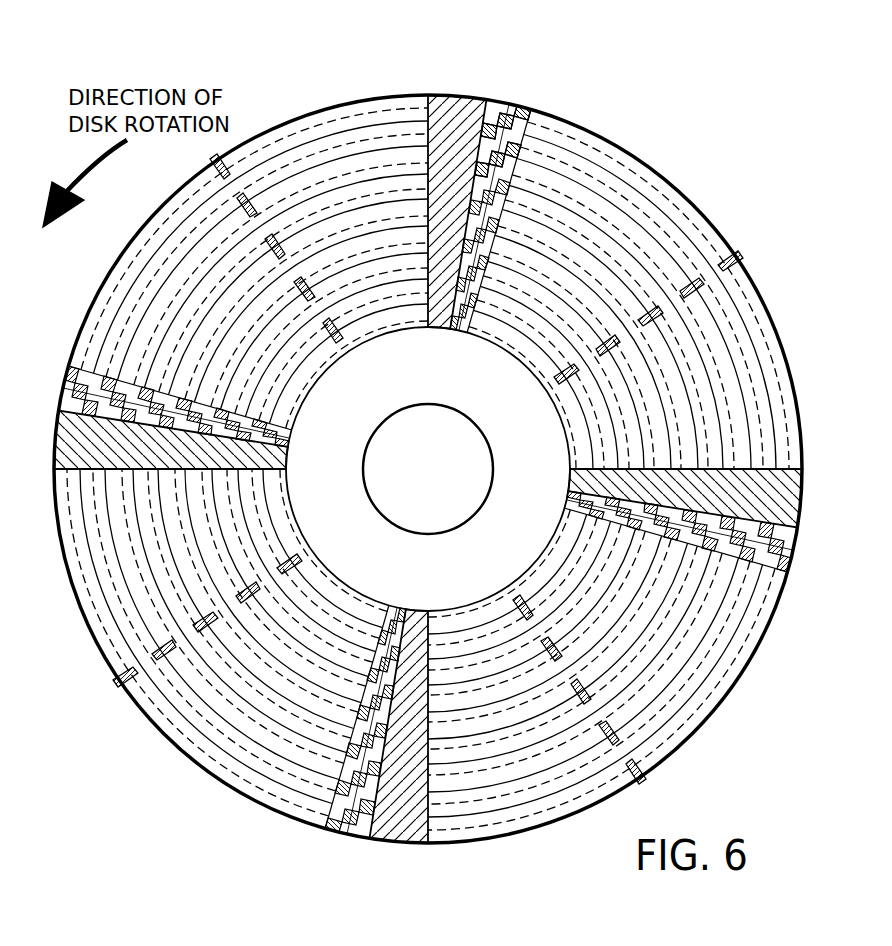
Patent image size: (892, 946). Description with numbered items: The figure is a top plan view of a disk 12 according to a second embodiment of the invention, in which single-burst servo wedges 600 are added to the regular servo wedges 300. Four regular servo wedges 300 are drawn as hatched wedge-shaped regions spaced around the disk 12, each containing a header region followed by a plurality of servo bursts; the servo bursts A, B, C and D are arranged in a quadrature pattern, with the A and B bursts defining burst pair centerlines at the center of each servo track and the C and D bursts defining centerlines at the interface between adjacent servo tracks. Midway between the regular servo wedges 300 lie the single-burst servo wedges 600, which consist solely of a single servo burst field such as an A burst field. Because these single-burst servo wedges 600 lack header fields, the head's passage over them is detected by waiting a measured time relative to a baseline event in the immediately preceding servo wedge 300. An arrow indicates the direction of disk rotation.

The disk 12 is at (753, 658).
The servo wedge 300 is at (431, 455).
The single-burst servo wedge 600 is at (203, 163).
The A burst A is at (603, 198).
The B burst B is at (523, 119).
The C burst C is at (491, 120).
The D burst D is at (504, 124).